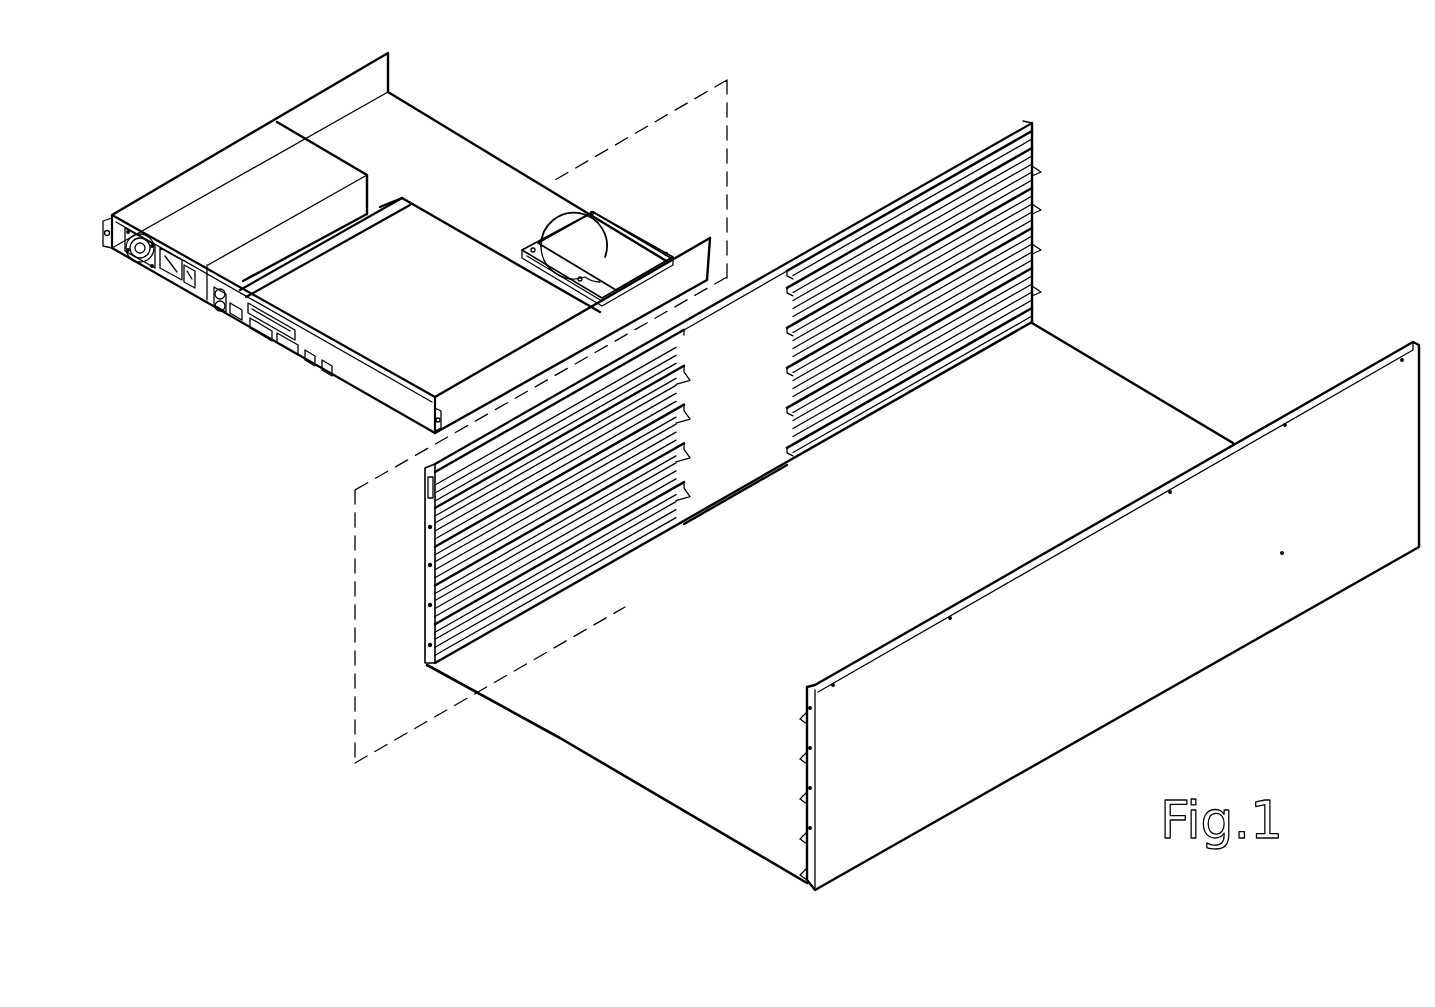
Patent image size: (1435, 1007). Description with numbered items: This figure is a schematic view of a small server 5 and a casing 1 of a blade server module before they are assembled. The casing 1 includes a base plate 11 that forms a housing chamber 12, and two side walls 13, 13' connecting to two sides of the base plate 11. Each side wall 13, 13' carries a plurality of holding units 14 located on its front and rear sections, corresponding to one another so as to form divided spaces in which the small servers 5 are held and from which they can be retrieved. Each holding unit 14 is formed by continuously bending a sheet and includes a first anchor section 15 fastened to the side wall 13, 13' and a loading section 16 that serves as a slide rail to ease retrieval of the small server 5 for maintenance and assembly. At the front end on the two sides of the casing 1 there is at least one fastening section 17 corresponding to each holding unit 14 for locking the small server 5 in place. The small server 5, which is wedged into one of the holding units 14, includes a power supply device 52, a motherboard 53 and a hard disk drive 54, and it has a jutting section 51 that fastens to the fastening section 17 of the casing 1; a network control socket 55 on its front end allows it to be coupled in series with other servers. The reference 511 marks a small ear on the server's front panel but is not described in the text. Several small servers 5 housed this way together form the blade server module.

The casing 1 is at (1223, 336).
The small server 5 is at (495, 150).
The base plate 11 is at (573, 752).
The housing chamber 12 is at (1070, 416).
The side wall 13 is at (735, 368).
The side wall 13' is at (1109, 616).
The holding unit 14 is at (1036, 148).
The first anchor section 15 is at (787, 262).
The loading section 16 is at (1028, 168).
The fastening section 17 is at (430, 587).
The jutting section 51 is at (432, 415).
The power supply device 52 is at (238, 160).
The motherboard 53 is at (402, 232).
The hard disk drive 54 is at (617, 243).
The network control socket 55 is at (307, 362).
The mounting ear 511 is at (104, 220).